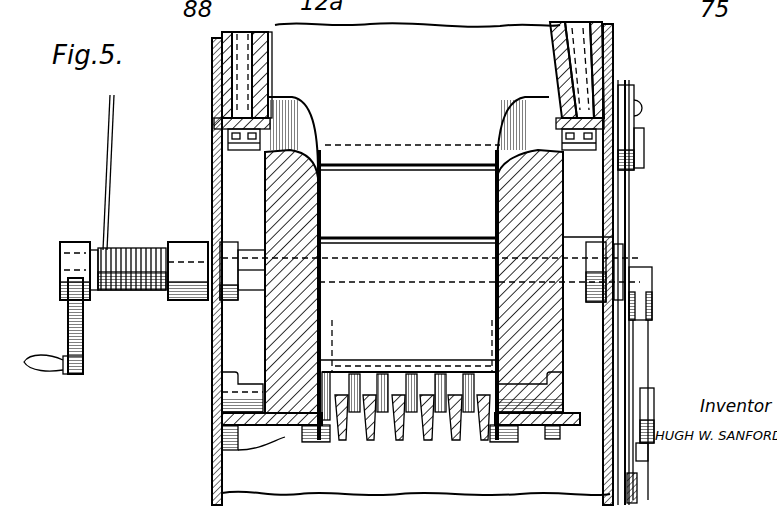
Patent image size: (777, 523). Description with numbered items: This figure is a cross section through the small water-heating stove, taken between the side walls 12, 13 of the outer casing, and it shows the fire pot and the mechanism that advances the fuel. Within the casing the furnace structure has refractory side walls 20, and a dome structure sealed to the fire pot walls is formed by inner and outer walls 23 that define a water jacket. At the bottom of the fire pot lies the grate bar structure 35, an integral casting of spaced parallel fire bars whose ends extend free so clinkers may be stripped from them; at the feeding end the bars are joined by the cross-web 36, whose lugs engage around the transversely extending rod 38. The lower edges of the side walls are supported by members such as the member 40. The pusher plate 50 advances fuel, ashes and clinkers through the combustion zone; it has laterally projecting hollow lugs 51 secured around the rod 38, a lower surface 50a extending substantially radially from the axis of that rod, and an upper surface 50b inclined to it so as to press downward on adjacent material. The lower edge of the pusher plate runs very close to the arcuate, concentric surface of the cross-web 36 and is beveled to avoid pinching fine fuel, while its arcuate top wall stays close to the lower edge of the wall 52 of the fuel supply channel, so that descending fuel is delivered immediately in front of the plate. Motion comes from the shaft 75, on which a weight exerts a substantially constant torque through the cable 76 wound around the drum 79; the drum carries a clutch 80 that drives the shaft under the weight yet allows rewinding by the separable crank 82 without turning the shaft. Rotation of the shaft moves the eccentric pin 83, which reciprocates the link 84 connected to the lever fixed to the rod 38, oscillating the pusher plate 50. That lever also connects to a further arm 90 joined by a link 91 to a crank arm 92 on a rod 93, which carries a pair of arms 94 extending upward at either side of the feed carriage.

The side wall 12 is at (626, 258).
The side wall 13 is at (212, 368).
The refractory side wall 20 is at (300, 207).
The inner and outer walls 23 is at (245, 33).
The grate bar structure 35 is at (455, 441).
The cross-web 36 is at (425, 376).
The transversely extending rod 38 is at (355, 414).
The supporting member 40 is at (214, 443).
The pusher plate 50 is at (330, 333).
The lower surface 50a is at (408, 325).
The upper surface 50b is at (408, 222).
The hollow lugs 51 is at (308, 443).
The wall 52 is at (410, 52).
The shaft 75 is at (248, 265).
The cable 76 is at (107, 142).
The drum 79 is at (100, 275).
The clutch 80 is at (196, 268).
The separable crank 82 is at (83, 343).
The eccentric pin 83 is at (650, 292).
The link 84 is at (644, 340).
The further arm 90 is at (642, 403).
The link 91 is at (624, 205).
The crank arm 92 is at (633, 128).
The rod 93 is at (400, 150).
The arms 94 is at (212, 88).